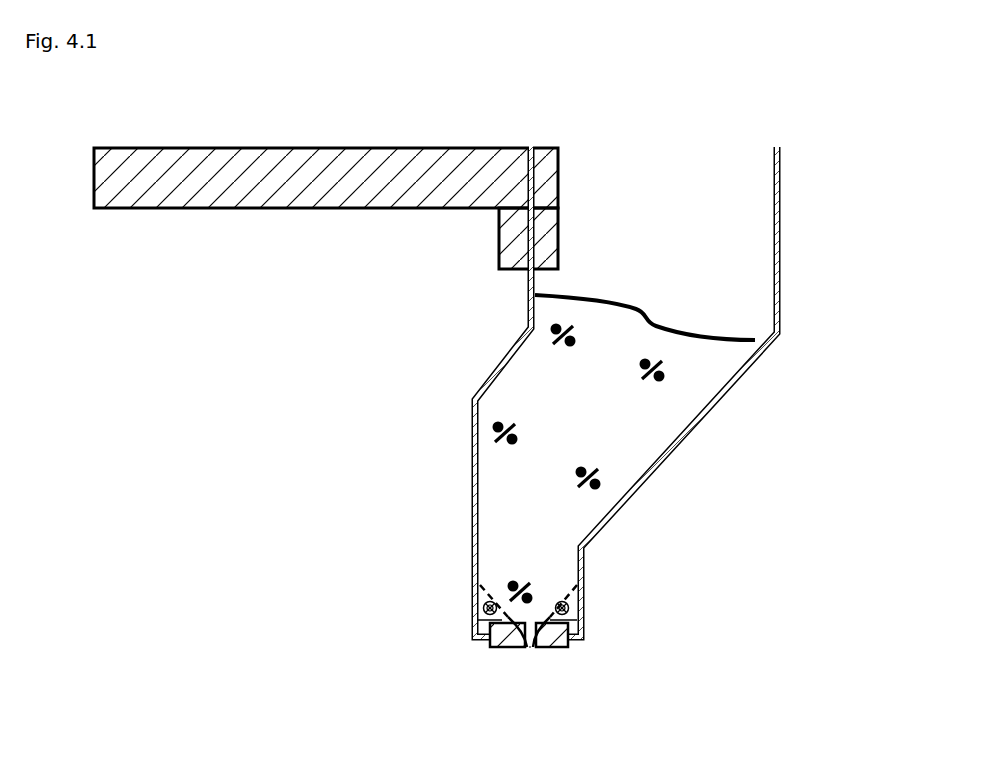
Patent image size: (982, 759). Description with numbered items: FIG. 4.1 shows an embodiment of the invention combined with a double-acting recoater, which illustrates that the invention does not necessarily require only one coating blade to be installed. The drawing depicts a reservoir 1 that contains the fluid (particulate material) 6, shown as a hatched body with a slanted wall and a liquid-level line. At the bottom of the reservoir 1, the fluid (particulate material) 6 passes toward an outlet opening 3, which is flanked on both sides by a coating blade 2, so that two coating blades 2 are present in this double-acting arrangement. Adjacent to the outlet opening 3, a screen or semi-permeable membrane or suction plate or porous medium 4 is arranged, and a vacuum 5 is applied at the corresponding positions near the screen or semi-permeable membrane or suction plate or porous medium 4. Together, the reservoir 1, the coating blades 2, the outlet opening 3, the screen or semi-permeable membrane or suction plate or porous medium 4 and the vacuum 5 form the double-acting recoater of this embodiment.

The reservoir 1 is at (843, 420).
The coating blade 2 is at (503, 651).
The outlet opening 3 is at (527, 650).
The screen or semi-permeable membrane or suction plate or porous medium 4 is at (561, 584).
The vacuum 5 is at (478, 593).
The fluid (particulate material) 6 is at (682, 377).